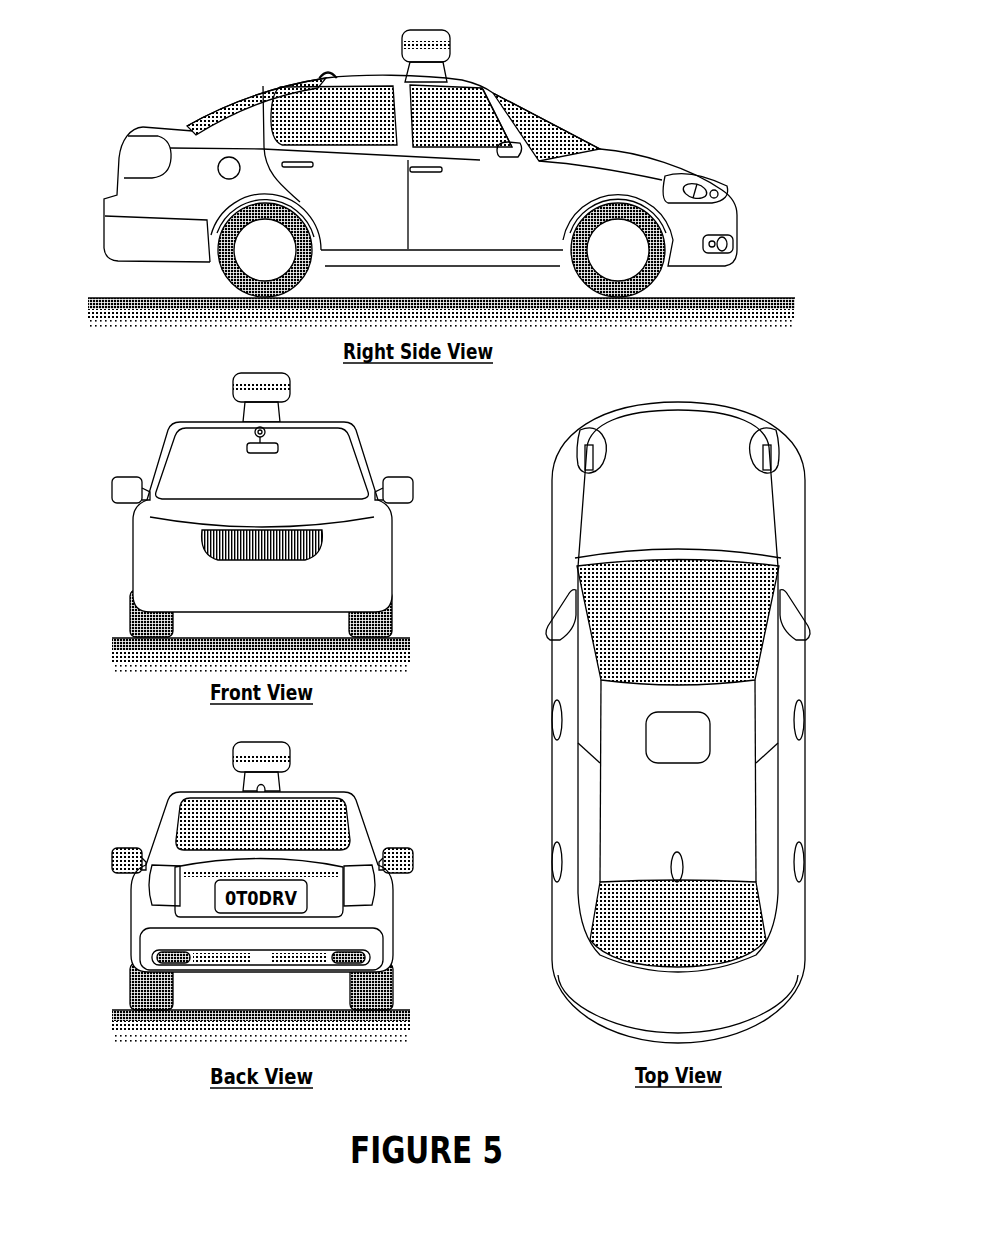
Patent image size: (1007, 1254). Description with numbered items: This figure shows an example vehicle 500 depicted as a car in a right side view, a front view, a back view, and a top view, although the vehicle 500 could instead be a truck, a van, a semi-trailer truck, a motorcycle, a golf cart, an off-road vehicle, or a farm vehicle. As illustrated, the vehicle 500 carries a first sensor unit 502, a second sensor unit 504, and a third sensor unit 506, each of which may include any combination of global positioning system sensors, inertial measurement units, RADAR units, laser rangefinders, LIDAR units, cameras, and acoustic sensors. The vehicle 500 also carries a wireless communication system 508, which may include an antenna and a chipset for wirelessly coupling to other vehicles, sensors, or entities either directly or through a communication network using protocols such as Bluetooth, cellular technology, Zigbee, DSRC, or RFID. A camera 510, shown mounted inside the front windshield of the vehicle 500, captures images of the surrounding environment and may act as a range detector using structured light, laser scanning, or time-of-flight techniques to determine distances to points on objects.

The vehicle 500 is at (100, 118).
The first sensor unit 502 is at (452, 52).
The second sensor unit 504 is at (738, 246).
The third sensor unit 506 is at (727, 192).
The wireless communication system 508 is at (324, 70).
The camera 510 is at (286, 432).